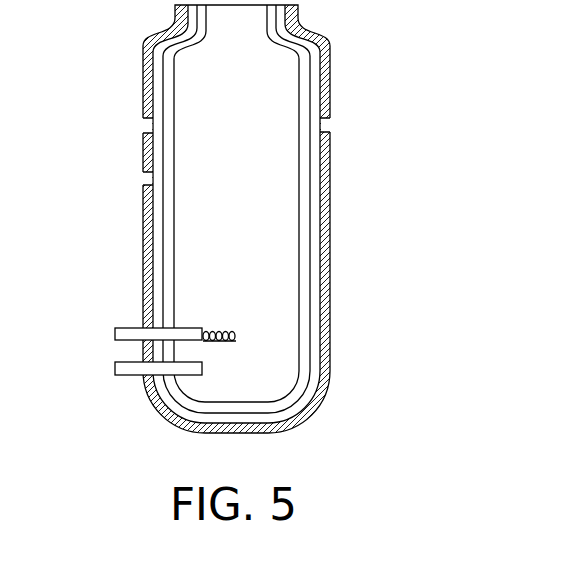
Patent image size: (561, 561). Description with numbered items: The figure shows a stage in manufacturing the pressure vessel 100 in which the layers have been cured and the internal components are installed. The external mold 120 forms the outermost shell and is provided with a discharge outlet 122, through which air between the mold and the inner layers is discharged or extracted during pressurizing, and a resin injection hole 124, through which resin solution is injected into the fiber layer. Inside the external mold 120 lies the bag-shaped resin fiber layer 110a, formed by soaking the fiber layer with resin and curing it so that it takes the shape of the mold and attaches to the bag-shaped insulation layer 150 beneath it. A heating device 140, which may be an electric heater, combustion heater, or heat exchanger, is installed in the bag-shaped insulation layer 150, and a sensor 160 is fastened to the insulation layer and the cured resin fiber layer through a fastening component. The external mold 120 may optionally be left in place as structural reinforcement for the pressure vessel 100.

The pressure vessel 100 is at (258, 234).
The bag-shaped resin fiber layer 110a is at (315, 321).
The external mold 120 is at (333, 71).
The discharge outlet 122 is at (149, 125).
The resin injection hole 124 is at (149, 179).
The heating device 140 is at (132, 333).
The bag-shaped insulation layer 150 is at (305, 263).
The sensor 160 is at (132, 370).